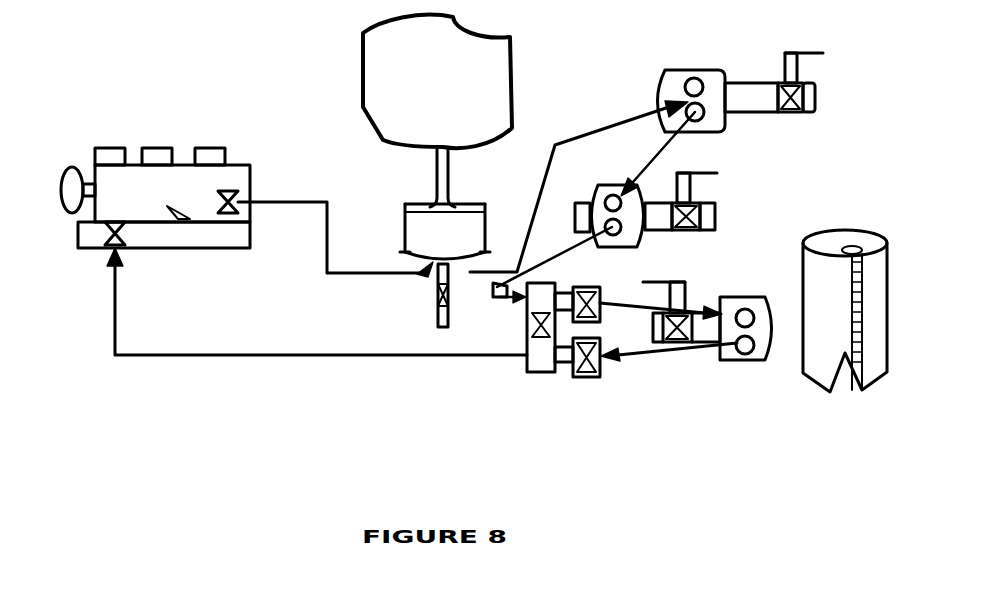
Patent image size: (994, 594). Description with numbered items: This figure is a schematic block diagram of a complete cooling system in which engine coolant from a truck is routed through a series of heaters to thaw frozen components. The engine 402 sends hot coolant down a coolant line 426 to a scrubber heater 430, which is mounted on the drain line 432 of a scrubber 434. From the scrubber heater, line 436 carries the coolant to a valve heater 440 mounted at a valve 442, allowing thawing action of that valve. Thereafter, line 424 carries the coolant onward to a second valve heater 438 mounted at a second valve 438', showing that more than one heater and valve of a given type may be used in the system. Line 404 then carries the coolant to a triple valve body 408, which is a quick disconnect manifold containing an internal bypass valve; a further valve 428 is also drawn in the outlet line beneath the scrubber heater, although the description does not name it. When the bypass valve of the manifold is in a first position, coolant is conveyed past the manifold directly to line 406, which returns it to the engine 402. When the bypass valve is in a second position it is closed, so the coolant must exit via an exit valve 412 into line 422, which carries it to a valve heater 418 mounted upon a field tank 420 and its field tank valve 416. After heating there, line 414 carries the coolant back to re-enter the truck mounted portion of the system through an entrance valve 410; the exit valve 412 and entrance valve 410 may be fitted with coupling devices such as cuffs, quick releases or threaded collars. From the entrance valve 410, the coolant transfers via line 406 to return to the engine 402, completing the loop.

The engine 402 is at (181, 249).
The line 404 is at (502, 305).
The line 406 is at (440, 357).
The triple valve body 408 is at (533, 375).
The entrance valve 410 is at (590, 378).
The exit valve 412 is at (600, 320).
The line 414 is at (653, 350).
The field tank valve 416 is at (703, 348).
The valve heater 418 is at (767, 367).
The field tank 420 is at (833, 393).
The line 422 is at (618, 296).
The line 424 is at (667, 138).
The coolant line 426 is at (307, 200).
The valve 428 is at (433, 295).
The scrubber heater 430 is at (403, 230).
The drain line 432 is at (437, 163).
The scrubber 434 is at (363, 75).
The line 436 is at (528, 236).
The valve heater 438 is at (609, 197).
The valve 438' is at (725, 201).
The valve heater 440 is at (698, 70).
The valve 442 is at (805, 115).